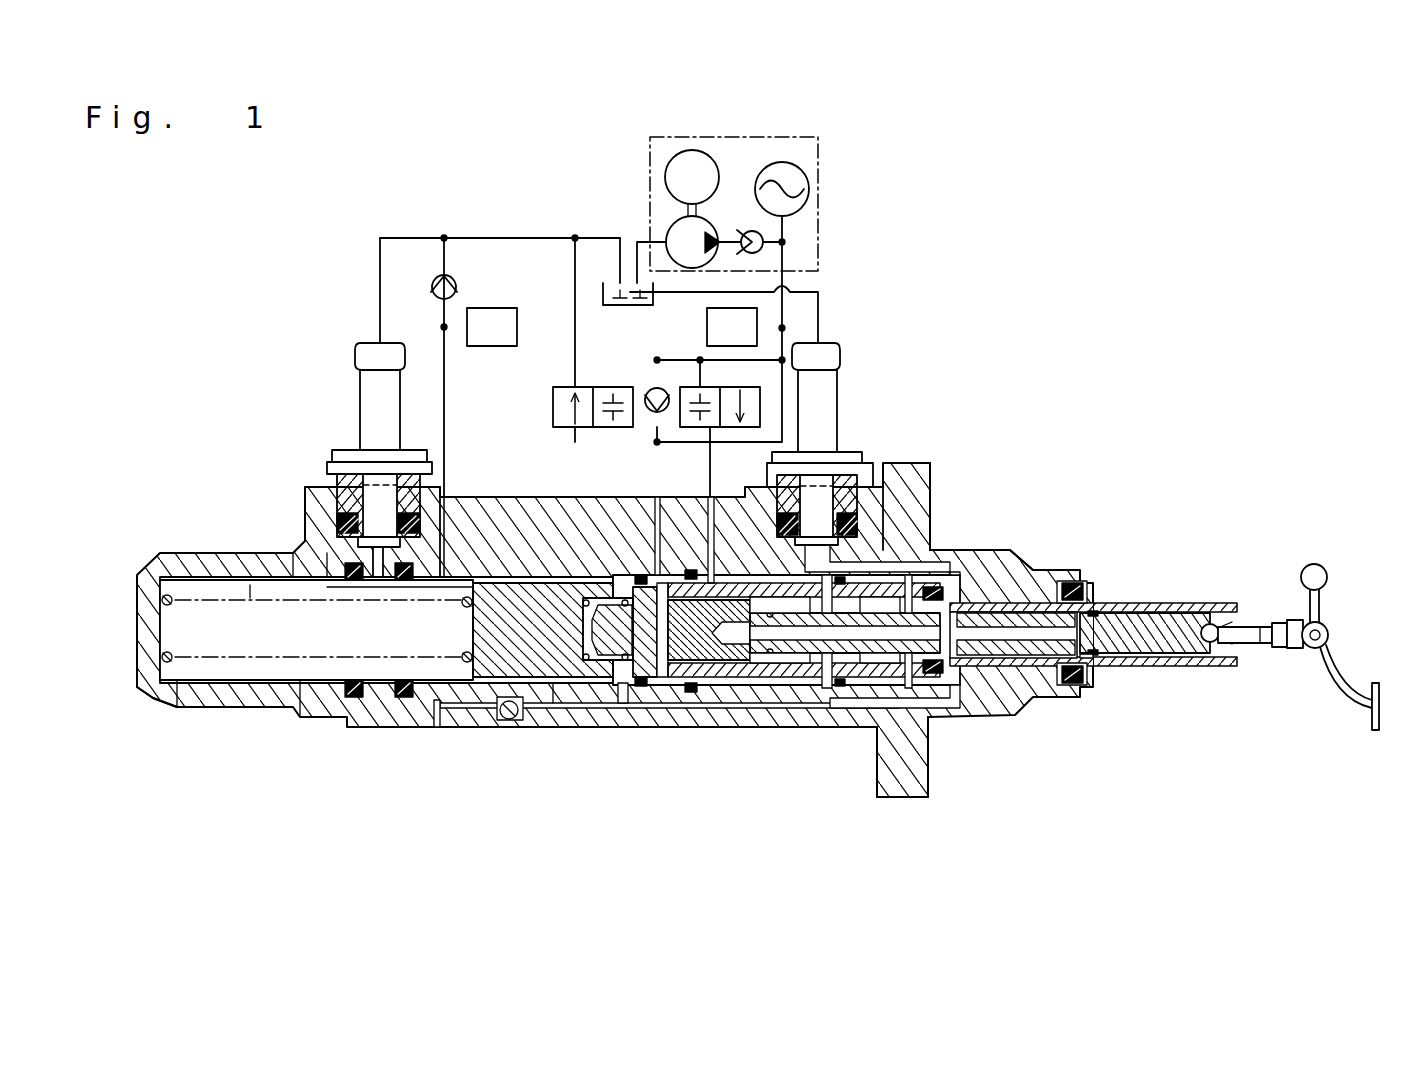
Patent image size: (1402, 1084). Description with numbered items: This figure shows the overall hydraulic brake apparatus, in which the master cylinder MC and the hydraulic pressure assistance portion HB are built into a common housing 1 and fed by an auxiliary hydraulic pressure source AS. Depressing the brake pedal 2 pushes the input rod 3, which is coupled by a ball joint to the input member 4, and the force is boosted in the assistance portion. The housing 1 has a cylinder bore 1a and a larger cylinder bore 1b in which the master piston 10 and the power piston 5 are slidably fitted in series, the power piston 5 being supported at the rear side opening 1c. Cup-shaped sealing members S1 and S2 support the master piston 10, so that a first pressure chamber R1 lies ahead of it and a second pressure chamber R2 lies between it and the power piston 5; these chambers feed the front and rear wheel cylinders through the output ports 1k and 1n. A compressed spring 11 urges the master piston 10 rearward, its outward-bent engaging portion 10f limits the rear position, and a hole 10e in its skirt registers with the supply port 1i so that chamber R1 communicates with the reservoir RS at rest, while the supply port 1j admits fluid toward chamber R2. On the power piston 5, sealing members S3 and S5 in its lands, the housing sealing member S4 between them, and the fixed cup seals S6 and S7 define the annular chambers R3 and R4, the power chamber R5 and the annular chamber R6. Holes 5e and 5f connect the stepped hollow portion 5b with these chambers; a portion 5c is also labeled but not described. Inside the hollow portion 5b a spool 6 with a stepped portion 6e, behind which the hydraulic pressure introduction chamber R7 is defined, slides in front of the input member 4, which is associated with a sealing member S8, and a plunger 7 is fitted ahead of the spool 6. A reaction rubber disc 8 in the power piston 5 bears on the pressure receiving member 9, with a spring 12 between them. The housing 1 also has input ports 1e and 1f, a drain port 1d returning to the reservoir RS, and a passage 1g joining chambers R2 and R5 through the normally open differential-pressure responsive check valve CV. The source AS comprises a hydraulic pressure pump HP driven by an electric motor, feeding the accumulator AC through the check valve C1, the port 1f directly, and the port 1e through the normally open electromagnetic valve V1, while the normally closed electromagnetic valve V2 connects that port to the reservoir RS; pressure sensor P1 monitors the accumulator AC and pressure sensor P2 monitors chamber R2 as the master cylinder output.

The master cylinder MC is at (195, 545).
The housing 1 is at (160, 572).
The cylinder bore 1a is at (207, 700).
The cylinder bore 1b is at (553, 703).
The rear side opening 1c is at (1115, 660).
The drain port 1d is at (940, 505).
The input port 1e is at (656, 570).
The input port 1f is at (713, 580).
The passage 1g is at (520, 730).
The fluid-supply port 1i is at (345, 585).
The fluid-supply port 1j is at (478, 505).
The output port 1k is at (163, 700).
The output port 1n is at (434, 727).
The brake pedal 2 is at (1333, 663).
The input rod 3 is at (1240, 625).
The input member 4 is at (1205, 655).
The power piston 5 is at (733, 705).
The stepped hollow portion 5b is at (1093, 634).
The sleeve 5c is at (1030, 697).
The hole 5e is at (805, 537).
The hole 5f is at (848, 590).
The spool 6 is at (927, 718).
The stepped portion 6e is at (773, 700).
The plunger 7 is at (707, 700).
The reaction rubber disc 8 is at (663, 705).
The pressure receiving member 9 is at (556, 610).
The master piston 10 is at (512, 600).
The hole 10e is at (365, 604).
The outward-bent engaging portion 10f is at (293, 707).
The compressed spring 11 is at (335, 608).
The spring 12 is at (610, 620).
The first pressure chamber R1 is at (258, 630).
The second pressure chamber R2 is at (618, 727).
The annular chamber R3 is at (653, 700).
The annular chamber R4 is at (763, 700).
The power chamber R5 is at (853, 700).
The annular chamber R6 is at (1023, 595).
The hydraulic pressure introduction chamber R7 is at (808, 700).
The sealing member S1 is at (343, 700).
The sealing member S2 is at (377, 705).
The sealing member S3 is at (620, 700).
The sealing member S4 is at (677, 700).
The sealing member S5 is at (820, 690).
The sealing member S6 is at (975, 690).
The sealing member S7 is at (1075, 680).
The sealing member S8 is at (1088, 600).
The hydraulic pressure assistance portion HB is at (950, 525).
The hydraulic pressure pump HP is at (670, 222).
The accumulator AC is at (805, 175).
The auxiliary hydraulic pressure source AS is at (820, 243).
The check valve C1 is at (759, 231).
The reservoir RS is at (605, 292).
The pressure sensor P1 is at (782, 328).
The pressure sensor P2 is at (467, 327).
The normally open electromagnetic valve V1 is at (710, 428).
The normally closed electromagnetic valve V2 is at (553, 413).
The check valve CV is at (500, 720).